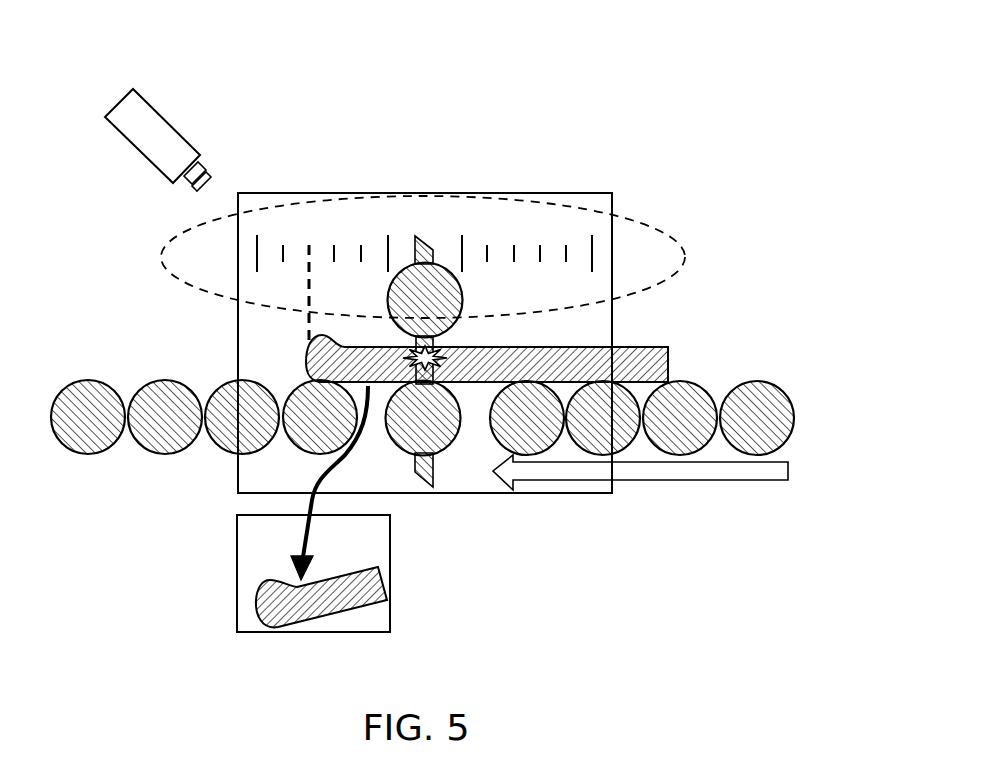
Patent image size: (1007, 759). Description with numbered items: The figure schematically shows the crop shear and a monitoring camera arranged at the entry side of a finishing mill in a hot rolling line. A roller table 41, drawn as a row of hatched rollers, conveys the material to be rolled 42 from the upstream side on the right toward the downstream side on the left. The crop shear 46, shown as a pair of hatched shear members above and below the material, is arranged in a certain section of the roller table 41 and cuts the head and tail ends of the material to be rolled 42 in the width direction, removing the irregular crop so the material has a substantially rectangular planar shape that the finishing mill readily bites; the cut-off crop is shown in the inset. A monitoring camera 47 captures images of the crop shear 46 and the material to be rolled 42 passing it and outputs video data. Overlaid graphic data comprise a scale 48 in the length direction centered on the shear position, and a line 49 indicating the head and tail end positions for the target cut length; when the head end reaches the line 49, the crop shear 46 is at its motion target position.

The roller table 41 is at (186, 353).
The material to be rolled 42 is at (668, 347).
The crop shear 46 is at (422, 262).
The monitoring camera 47 is at (167, 118).
The scale 48 is at (505, 228).
The line 49 is at (310, 290).